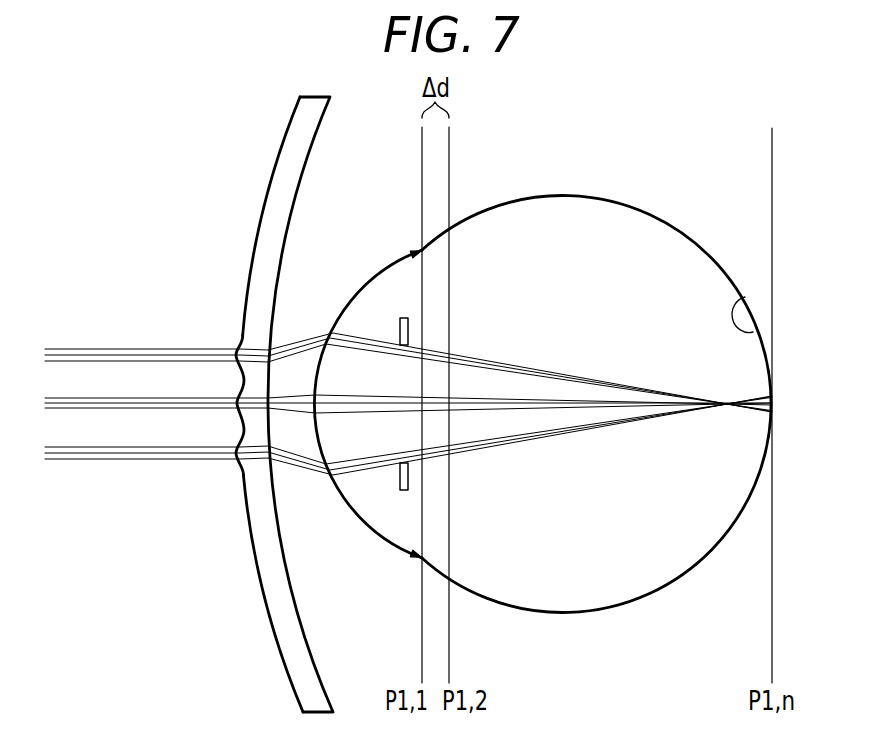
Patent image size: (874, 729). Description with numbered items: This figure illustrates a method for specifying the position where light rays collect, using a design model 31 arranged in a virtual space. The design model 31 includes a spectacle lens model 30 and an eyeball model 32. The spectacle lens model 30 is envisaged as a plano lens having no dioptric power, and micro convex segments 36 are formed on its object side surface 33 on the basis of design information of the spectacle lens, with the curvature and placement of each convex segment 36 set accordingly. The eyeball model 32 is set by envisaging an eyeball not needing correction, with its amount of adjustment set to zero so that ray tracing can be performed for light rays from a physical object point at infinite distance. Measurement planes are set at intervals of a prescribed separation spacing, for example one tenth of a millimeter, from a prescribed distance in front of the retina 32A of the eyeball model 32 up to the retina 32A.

The spectacle lens model 30 is at (272, 404).
The design model 31 is at (579, 354).
The eyeball model 32 is at (706, 252).
The retina 32A is at (745, 297).
The surface (object side surface) 33 is at (257, 237).
The micro convex segments 36 is at (237, 347).